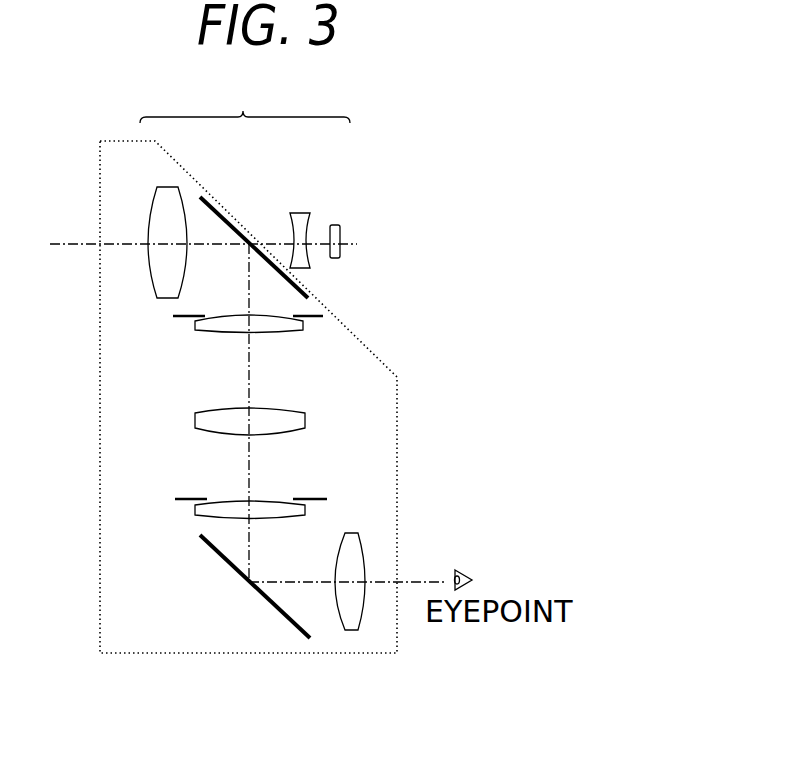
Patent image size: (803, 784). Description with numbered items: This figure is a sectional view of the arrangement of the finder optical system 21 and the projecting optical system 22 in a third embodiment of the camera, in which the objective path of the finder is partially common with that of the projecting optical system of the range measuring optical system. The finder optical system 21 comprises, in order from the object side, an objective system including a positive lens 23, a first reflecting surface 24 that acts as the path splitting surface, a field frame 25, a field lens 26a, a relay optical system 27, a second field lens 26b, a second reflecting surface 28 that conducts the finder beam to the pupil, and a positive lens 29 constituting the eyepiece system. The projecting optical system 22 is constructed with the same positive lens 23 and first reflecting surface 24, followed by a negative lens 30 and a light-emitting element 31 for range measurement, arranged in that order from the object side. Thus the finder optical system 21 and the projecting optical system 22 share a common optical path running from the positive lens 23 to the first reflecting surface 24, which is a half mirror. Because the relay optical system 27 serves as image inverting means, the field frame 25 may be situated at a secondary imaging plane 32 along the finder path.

The finder optical system 21 is at (100, 203).
The projecting optical system 22 is at (245, 101).
The positive lens 23 is at (160, 283).
The first reflecting surface 24 is at (223, 212).
The field frame 25 is at (317, 313).
The field lens 26a is at (292, 332).
The field lens 26b is at (205, 512).
The relay optical system 27 is at (207, 422).
The second reflecting surface 28 is at (222, 558).
The positive lens 29 is at (357, 550).
The negative lens 30 is at (303, 220).
The light-emitting element 31 is at (342, 230).
The secondary imaging plane 32 is at (315, 497).